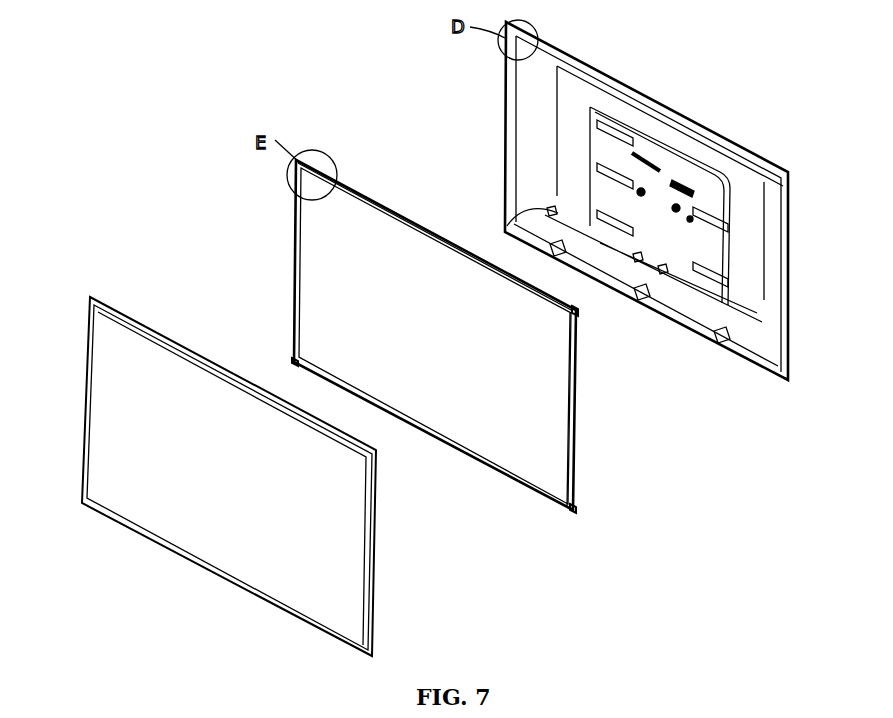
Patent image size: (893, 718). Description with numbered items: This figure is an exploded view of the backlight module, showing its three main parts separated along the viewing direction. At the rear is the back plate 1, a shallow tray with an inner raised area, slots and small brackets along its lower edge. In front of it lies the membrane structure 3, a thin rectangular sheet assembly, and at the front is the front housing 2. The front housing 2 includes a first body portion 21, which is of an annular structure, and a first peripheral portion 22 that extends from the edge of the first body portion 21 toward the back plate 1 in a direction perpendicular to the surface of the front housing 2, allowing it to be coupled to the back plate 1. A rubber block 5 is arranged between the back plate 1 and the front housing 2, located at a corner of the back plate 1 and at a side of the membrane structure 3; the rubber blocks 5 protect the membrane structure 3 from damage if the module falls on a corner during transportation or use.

The back plate 1 is at (530, 112).
The front housing 2 is at (201, 467).
The first body portion 21 is at (209, 477).
The first peripheral portion 22 is at (88, 297).
The membrane structure 3 is at (318, 266).
The rubber block 5 is at (293, 362).